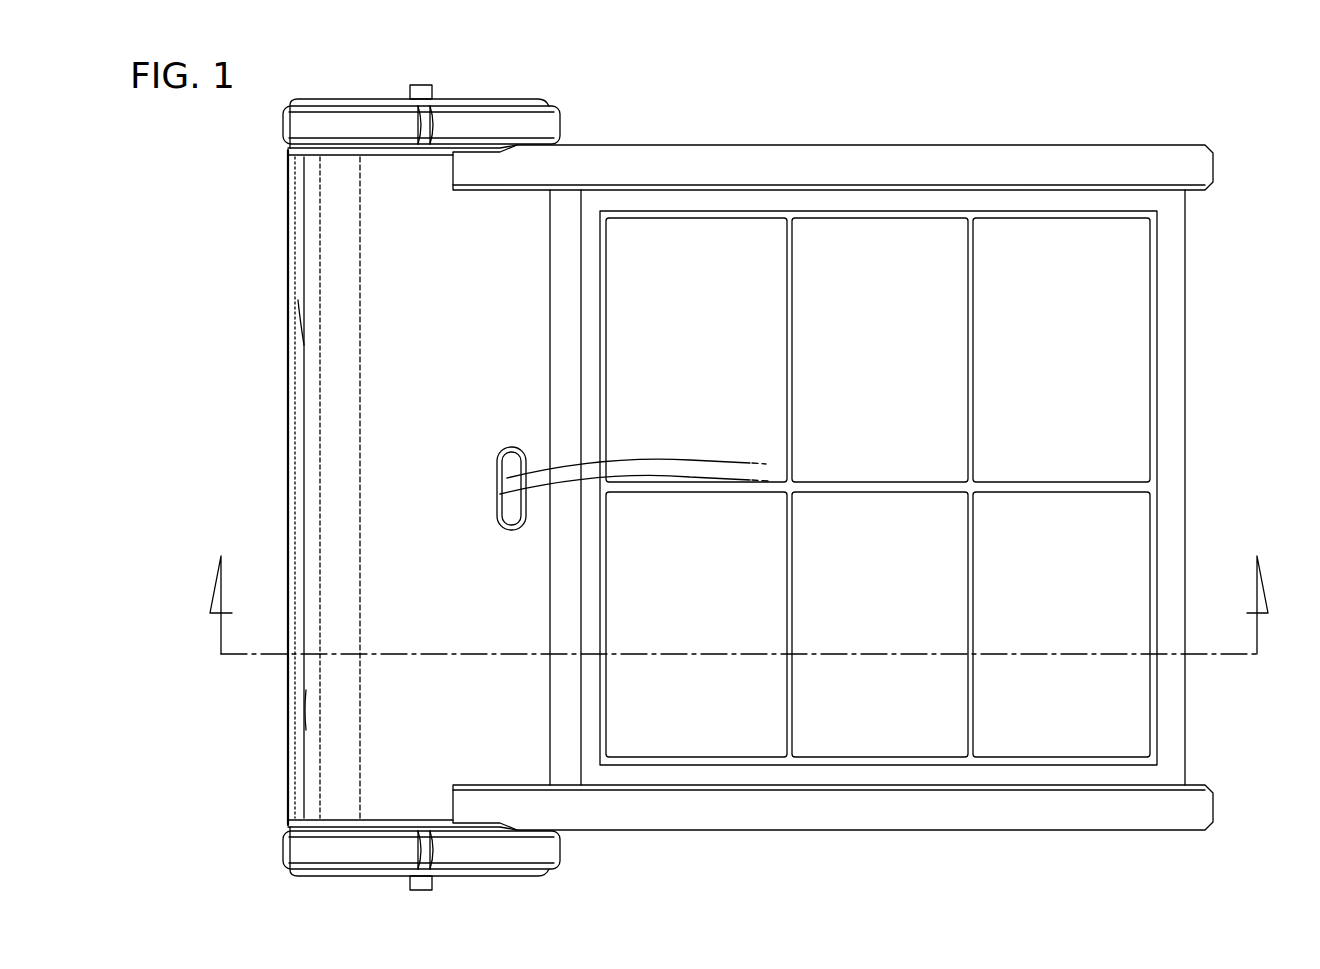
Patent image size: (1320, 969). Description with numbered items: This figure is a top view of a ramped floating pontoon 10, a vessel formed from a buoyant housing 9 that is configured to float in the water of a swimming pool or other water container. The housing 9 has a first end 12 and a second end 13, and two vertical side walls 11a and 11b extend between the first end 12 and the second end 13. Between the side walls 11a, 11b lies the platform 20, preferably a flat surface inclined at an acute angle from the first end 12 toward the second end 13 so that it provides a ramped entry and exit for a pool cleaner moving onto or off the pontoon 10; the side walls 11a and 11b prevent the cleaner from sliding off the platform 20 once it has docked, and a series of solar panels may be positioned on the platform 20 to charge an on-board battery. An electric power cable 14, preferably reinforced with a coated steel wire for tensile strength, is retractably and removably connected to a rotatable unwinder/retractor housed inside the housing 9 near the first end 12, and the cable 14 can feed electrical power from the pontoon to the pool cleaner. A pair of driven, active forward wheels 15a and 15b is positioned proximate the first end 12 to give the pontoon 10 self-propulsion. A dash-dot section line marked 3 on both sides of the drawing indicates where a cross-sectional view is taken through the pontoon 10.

The section line 3- 3 is at (737, 582).
The buoyant housing 9 is at (430, 333).
The floating pontoon 10 is at (898, 87).
The vertical side wall 11a is at (771, 818).
The vertical side wall 11b is at (650, 162).
The first end 12 is at (266, 322).
The second end 13 is at (1200, 338).
The electric power cable 14 is at (680, 465).
The driven wheel 15a is at (363, 892).
The driven wheel 15b is at (373, 79).
The platform 20 is at (881, 328).